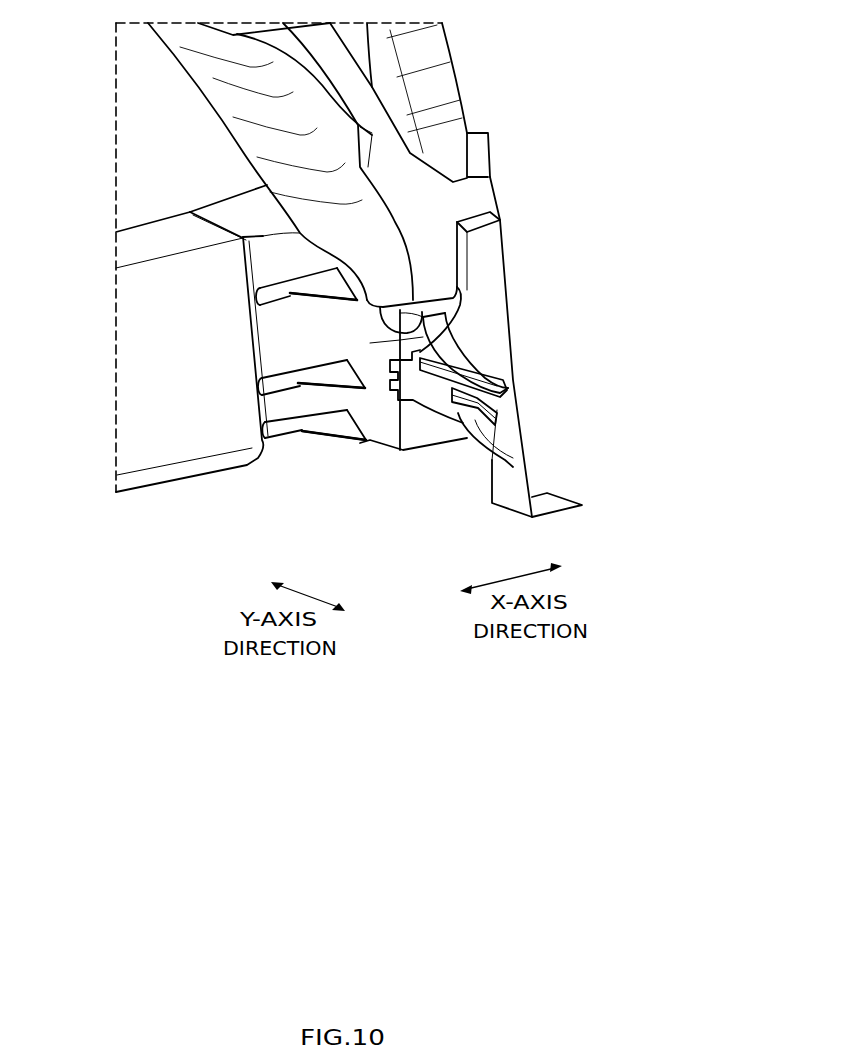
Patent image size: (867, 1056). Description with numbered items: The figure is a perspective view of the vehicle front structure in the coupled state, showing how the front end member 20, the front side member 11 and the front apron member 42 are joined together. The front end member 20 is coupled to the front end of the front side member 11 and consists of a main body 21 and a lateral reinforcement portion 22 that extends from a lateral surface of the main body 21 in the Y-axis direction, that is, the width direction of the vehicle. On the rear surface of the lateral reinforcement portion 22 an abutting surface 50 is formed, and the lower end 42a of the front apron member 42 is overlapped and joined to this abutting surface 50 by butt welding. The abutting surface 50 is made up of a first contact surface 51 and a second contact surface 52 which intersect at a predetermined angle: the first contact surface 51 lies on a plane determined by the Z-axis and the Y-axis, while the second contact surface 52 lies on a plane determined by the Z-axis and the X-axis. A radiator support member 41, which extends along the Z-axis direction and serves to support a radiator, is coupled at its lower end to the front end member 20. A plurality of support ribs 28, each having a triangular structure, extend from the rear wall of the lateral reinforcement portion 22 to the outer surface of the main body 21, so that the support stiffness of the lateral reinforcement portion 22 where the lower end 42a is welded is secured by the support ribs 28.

The front side member 11 is at (133, 358).
The front end member 20 is at (259, 357).
The main body 21 is at (225, 212).
The lateral reinforcement portion 22 is at (387, 432).
The support ribs 28 is at (335, 283).
The radiator support member 41 is at (447, 72).
The front apron member 42 is at (230, 101).
The lower end of front apron member 42a is at (440, 245).
The abutting surface 50 is at (501, 347).
The first contact surface 51 is at (440, 320).
The second contact surface 52 is at (463, 280).